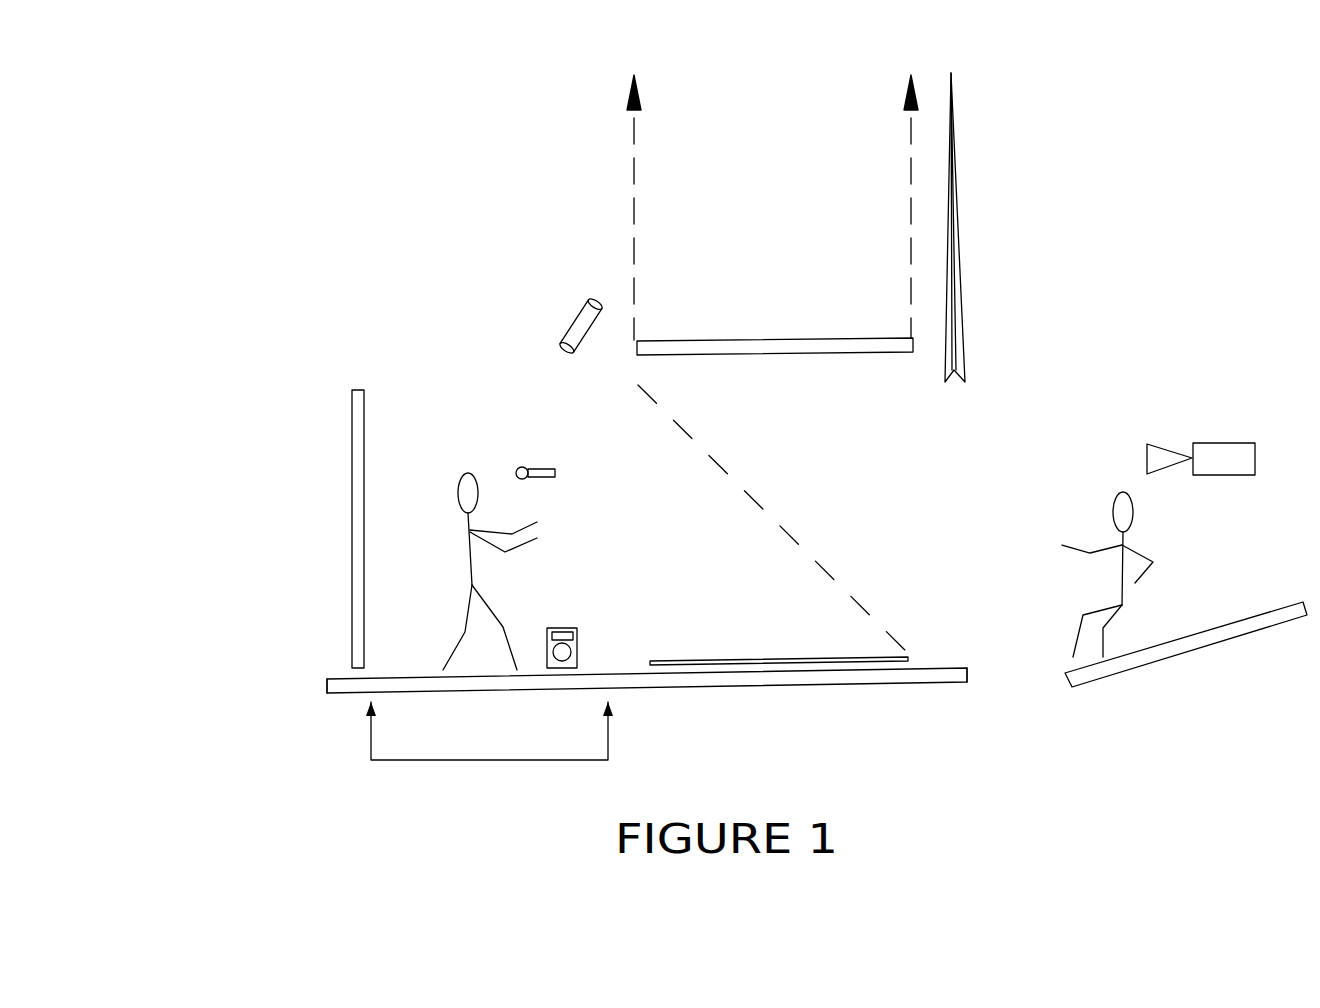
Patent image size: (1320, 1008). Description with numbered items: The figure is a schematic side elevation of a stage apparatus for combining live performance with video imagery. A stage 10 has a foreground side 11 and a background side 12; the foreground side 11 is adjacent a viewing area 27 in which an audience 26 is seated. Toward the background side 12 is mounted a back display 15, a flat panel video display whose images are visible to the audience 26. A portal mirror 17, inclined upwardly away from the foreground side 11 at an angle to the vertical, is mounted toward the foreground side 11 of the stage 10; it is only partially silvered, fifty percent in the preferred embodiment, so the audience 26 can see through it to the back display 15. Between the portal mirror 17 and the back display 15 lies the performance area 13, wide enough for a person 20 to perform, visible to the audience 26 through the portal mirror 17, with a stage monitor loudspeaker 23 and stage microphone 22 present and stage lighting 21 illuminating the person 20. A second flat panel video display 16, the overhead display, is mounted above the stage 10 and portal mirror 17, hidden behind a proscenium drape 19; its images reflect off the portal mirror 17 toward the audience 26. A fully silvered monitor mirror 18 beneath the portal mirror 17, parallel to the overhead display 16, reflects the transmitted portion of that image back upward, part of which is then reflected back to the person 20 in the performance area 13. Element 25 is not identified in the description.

The stage 10 is at (718, 683).
The foreground side 11 is at (969, 686).
The background side 12 is at (325, 675).
The performance area 13 is at (489, 760).
The back display 15 is at (350, 468).
The second flat panel video display 16 is at (820, 340).
The portal mirror 17 is at (736, 470).
The monitor mirror 18 is at (808, 654).
The proscenium drape 19 is at (966, 262).
The person 20 is at (461, 478).
The stage lighting 21 is at (576, 304).
The stage microphone 22 is at (539, 466).
The stage monitor loudspeaker 23 is at (570, 626).
The camera 25 is at (1225, 441).
The audience 26 is at (1110, 497).
The viewing area 27 is at (1143, 672).